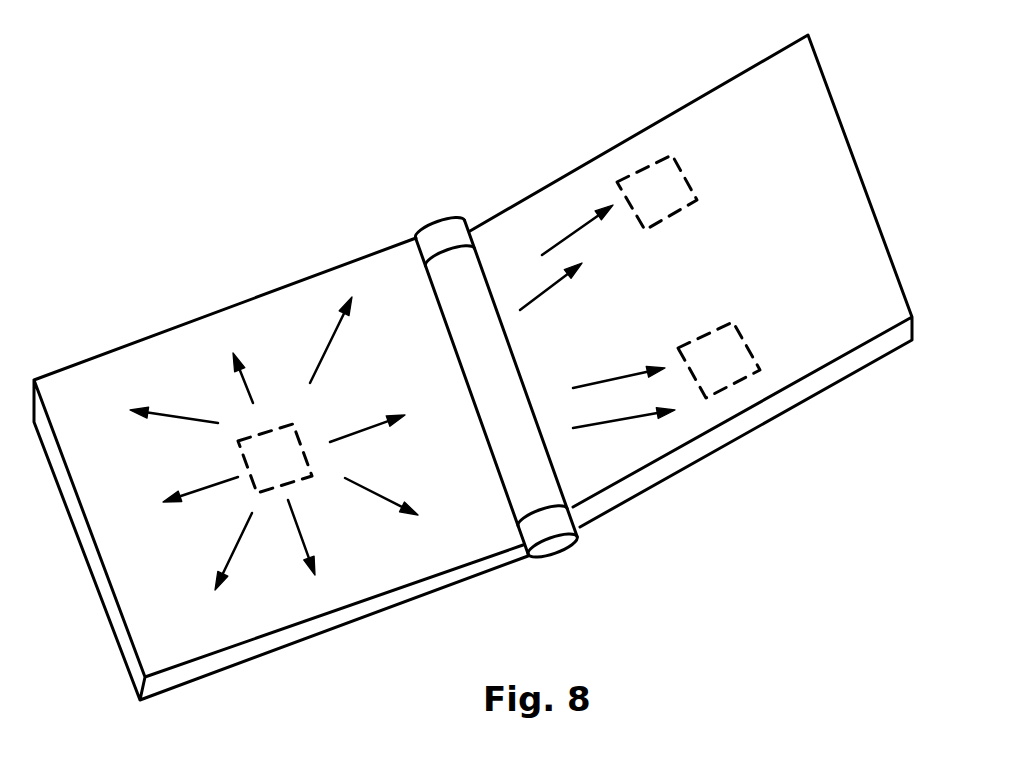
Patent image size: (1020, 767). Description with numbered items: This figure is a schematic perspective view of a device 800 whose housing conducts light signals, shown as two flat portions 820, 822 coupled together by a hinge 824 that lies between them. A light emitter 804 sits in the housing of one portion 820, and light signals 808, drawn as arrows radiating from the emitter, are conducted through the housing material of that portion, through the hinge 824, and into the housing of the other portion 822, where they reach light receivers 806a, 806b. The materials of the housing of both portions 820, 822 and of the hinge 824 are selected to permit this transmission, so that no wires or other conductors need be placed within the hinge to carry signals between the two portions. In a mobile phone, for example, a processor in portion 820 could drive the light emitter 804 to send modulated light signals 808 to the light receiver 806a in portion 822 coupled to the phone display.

The device 800 is at (209, 192).
The light emitter 804 is at (277, 422).
The light receiver 806a is at (641, 166).
The light receiver 806b is at (728, 390).
The light signal 808 is at (173, 413).
The portion 820 is at (372, 620).
The portion 822 is at (540, 190).
The hinge 824 is at (447, 218).